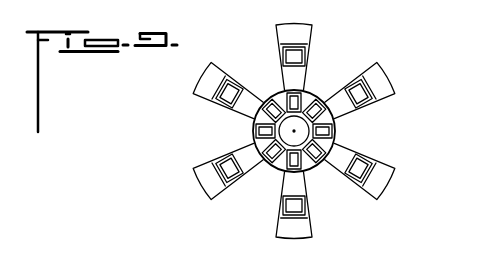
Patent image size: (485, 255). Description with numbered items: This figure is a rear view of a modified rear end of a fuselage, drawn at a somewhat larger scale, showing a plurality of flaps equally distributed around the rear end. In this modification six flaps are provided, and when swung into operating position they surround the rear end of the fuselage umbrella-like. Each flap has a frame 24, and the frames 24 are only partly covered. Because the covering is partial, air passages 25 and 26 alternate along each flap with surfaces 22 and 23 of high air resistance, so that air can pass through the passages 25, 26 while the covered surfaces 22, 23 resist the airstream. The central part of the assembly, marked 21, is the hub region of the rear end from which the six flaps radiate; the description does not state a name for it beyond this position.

The hub 21 is at (290, 138).
The surface of high air resistance 22 is at (210, 80).
The surface of high air resistance 23 is at (237, 110).
The frame 24 is at (226, 104).
The air passage 25 is at (220, 102).
The air passage 26 is at (266, 108).